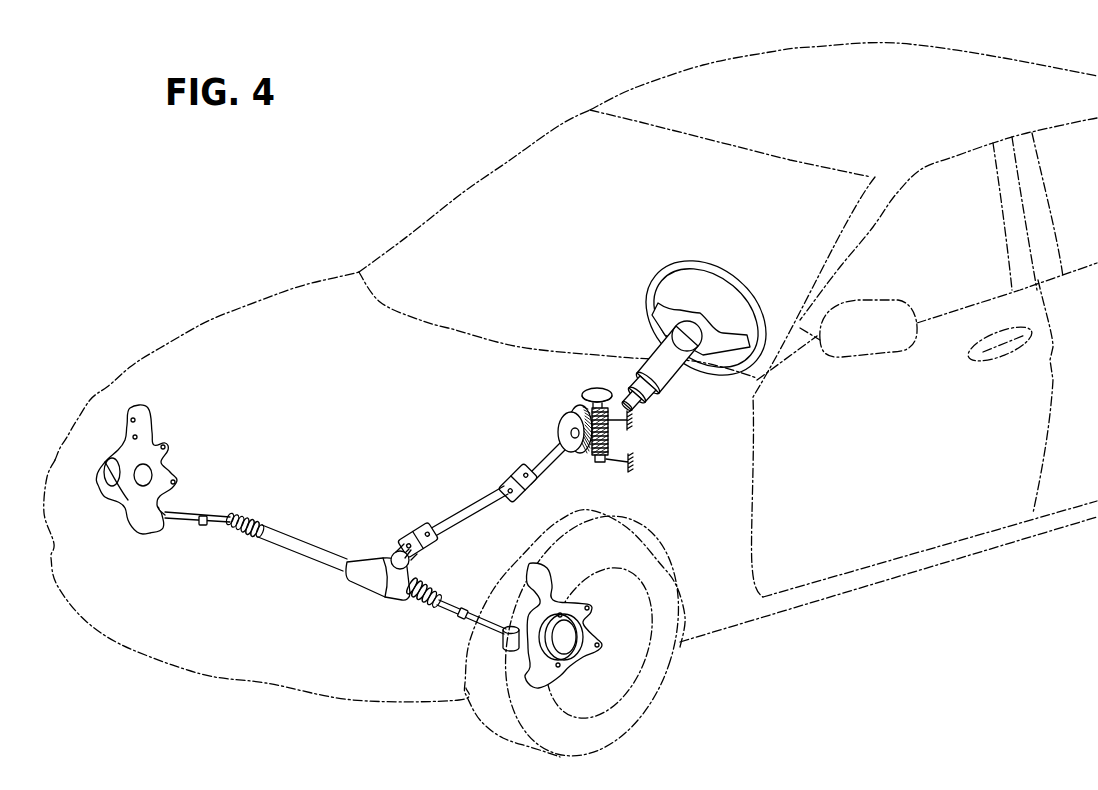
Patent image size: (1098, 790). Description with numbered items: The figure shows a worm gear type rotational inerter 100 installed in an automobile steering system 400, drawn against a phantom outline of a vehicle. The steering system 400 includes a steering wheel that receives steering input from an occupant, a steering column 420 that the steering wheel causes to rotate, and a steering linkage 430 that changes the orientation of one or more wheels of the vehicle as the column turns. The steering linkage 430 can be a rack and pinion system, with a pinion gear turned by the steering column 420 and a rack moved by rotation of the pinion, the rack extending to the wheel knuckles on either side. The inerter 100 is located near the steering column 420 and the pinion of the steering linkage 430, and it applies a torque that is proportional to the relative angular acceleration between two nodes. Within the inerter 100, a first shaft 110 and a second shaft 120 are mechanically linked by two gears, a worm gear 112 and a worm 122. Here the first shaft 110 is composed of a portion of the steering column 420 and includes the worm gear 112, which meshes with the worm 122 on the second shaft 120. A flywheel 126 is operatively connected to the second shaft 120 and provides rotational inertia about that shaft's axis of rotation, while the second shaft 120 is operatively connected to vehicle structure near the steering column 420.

The automobile steering system 400 is at (392, 405).
The inerter 100 is at (539, 420).
The steering column 420 is at (625, 375).
The first shaft 110 is at (620, 403).
The flywheel 126 is at (597, 391).
The second shaft 120 is at (610, 438).
The worm gear 112 is at (566, 410).
The worm 122 is at (630, 446).
The steering linkage 430 is at (371, 580).